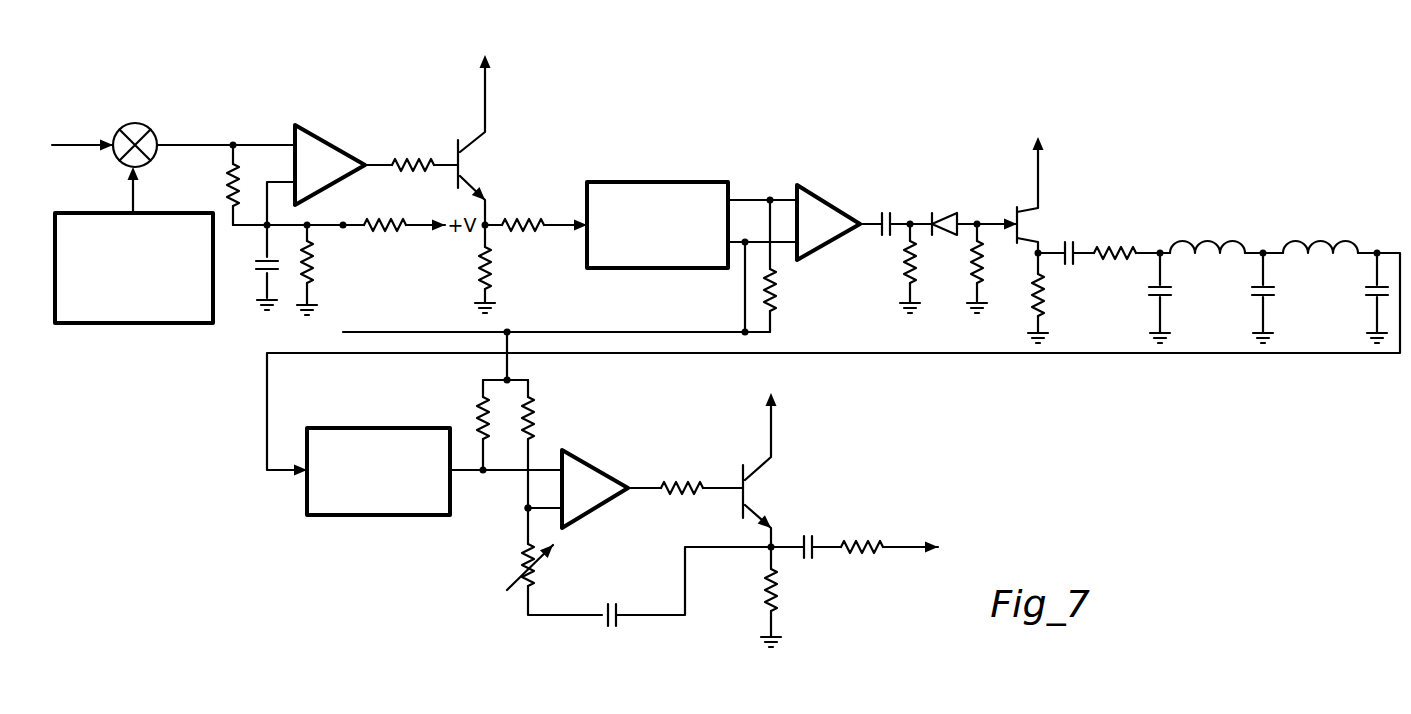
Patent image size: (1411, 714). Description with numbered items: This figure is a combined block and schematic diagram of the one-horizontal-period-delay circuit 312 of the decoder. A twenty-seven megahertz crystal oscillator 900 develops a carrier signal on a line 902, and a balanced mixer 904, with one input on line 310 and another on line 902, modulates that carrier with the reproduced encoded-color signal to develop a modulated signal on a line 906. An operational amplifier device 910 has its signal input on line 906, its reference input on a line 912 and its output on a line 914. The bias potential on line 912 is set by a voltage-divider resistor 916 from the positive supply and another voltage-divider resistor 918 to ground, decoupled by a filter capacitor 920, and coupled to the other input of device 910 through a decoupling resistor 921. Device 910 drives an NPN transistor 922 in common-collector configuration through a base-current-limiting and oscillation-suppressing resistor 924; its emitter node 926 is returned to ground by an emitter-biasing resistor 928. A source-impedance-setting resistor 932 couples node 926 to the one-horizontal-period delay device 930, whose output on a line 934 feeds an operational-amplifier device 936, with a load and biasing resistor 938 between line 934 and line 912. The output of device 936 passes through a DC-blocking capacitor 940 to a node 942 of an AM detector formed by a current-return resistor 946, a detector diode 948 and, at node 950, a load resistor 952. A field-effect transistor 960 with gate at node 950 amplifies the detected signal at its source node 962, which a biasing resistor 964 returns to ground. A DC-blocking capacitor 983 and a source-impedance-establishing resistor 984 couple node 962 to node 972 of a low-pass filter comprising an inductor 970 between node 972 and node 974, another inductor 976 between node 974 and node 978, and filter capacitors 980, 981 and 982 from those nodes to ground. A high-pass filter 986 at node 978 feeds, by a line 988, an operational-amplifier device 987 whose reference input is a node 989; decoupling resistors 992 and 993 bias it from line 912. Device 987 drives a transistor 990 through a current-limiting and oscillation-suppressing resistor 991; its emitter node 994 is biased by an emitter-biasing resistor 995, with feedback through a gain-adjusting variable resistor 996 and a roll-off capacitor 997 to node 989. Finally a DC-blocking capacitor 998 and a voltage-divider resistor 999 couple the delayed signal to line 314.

The line 310 is at (71, 142).
The one-horizontal-period-delay circuit 312 is at (1095, 454).
The line 314 is at (908, 543).
The 27 megahertz crystal oscillator 900 is at (150, 213).
The line 902 is at (128, 195).
The balanced mixer 904 is at (149, 122).
The line 906 is at (197, 143).
The operational amplifier device 910 is at (338, 137).
The line 912 is at (234, 228).
The line 914 is at (370, 162).
The voltage-divider resistor 916 is at (377, 217).
The voltage-divider resistor 918 is at (315, 263).
The filter capacitor 920 is at (257, 263).
The decoupling resistor 921 is at (226, 185).
The NPN transistor 922 is at (468, 164).
The base-current-limiting and oscillation-suppressing resistor 924 is at (418, 158).
The node 926 is at (488, 222).
The emitter-biasing resistor 928 is at (480, 278).
The one-horizontal-period delay device 930 is at (655, 180).
The source-impedance-setting resistor 932 is at (523, 232).
The line 934 is at (756, 197).
The operational-amplifier device 936 is at (839, 199).
The load and biasing resistor 938 is at (776, 290).
The DC-blocking capacitor 940 is at (882, 215).
The node 942 is at (911, 220).
The current-return resistor 946 is at (906, 249).
The detector diode 948 is at (942, 215).
The node 950 is at (975, 232).
The load resistor 952 is at (982, 257).
The field-effect transistor 960 is at (1031, 224).
The node 962 is at (1042, 247).
The biasing resistor 964 is at (1045, 305).
The inductor 970 is at (1205, 238).
The node 972 is at (1160, 248).
The node 974 is at (1263, 248).
The inductor 976 is at (1313, 238).
The node 978 is at (1377, 248).
The filter capacitor 980 is at (1170, 292).
The filter capacitor 981 is at (1253, 298).
The filter capacitor 982 is at (1365, 293).
The DC-blocking capacitor 983 is at (1065, 260).
The source-impedance-establishing resistor 984 is at (1116, 245).
The high-pass filter 986 is at (395, 428).
The operational-amplifier device 987 is at (610, 467).
The line 988 is at (464, 473).
The node 989 is at (523, 508).
The transistor 990 is at (757, 497).
The current-limiting and oscillation-suppressing resistor 991 is at (678, 487).
The decoupling resistor 992 is at (480, 418).
The decoupling resistor 993 is at (533, 423).
The node 994 is at (780, 538).
The emitter-biasing resistor 995 is at (778, 596).
The gain-adjusting variable resistor 996 is at (523, 563).
The roll-off capacitor 997 is at (612, 607).
The DC-blocking capacitor 998 is at (808, 555).
The voltage-divider resistor 999 is at (867, 537).